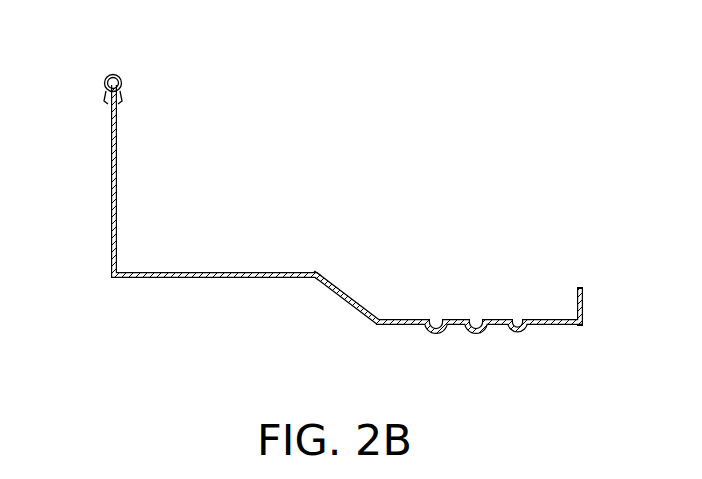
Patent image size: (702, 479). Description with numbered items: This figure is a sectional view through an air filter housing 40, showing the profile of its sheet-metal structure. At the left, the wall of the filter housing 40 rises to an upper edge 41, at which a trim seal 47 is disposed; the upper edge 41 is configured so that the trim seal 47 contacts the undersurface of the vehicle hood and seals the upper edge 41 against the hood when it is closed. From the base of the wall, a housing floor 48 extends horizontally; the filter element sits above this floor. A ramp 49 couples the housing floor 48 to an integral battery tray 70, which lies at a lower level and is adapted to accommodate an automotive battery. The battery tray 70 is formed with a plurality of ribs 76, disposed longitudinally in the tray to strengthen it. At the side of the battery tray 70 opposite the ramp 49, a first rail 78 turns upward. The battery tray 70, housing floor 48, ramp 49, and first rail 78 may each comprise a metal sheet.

The filter housing 40 is at (506, 123).
The upper edge 41 is at (105, 83).
The trim seal 47 is at (113, 75).
The housing floor 48 is at (216, 272).
The ramp 49 is at (343, 293).
The battery tray 70 is at (540, 318).
The ribs 76 is at (435, 333).
The first rail 78 is at (585, 300).